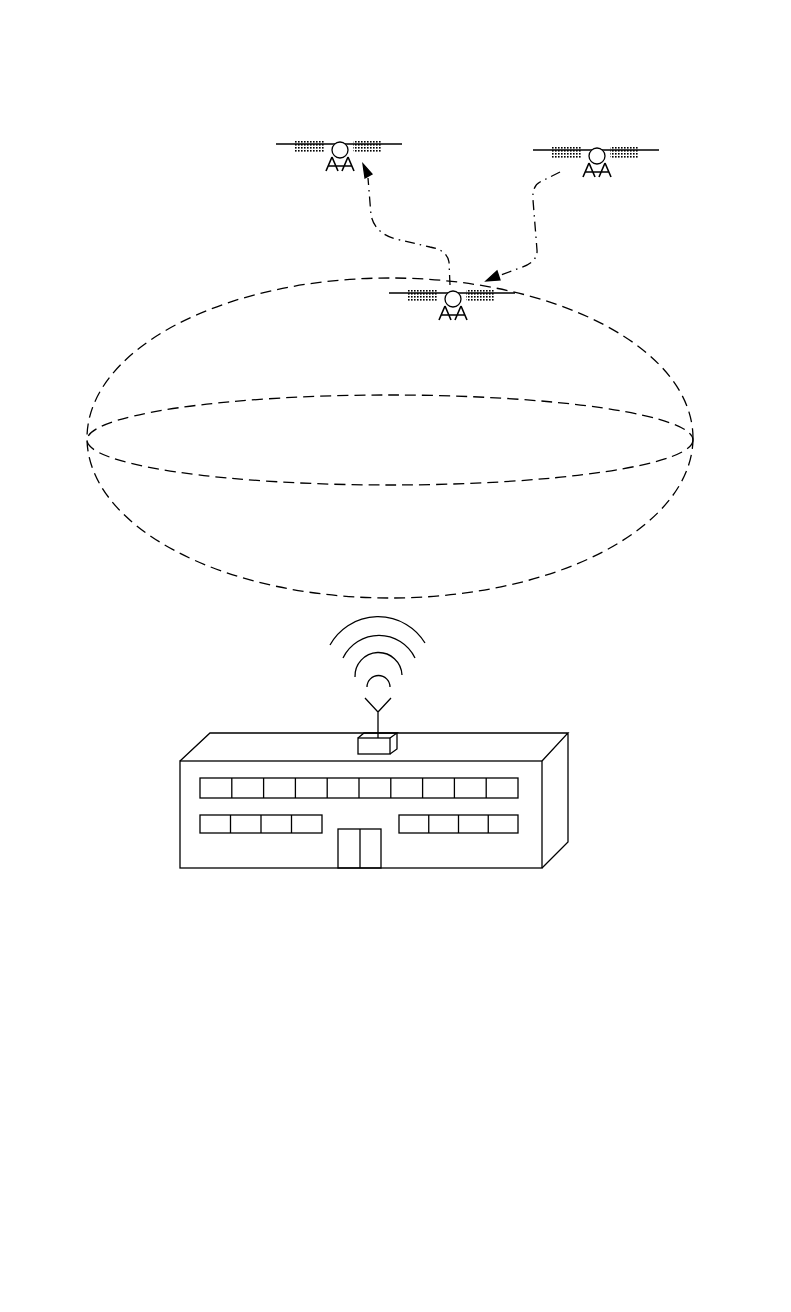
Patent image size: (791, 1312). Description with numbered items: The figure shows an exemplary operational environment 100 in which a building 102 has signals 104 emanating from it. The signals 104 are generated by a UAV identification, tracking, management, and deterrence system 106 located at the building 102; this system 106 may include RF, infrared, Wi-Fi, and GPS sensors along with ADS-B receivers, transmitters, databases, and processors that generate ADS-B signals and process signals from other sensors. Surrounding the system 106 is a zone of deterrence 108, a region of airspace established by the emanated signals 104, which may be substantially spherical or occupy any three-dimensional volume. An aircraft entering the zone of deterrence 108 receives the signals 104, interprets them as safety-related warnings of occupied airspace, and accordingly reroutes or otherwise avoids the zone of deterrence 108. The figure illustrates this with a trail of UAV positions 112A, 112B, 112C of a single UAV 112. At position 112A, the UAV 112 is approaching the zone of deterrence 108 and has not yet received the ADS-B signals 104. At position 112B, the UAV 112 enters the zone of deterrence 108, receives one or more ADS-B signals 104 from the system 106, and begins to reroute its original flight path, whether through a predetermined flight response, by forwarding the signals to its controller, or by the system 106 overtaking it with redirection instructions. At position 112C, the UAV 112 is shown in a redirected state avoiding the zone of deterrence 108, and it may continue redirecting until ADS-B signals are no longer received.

The operational environment 100 is at (128, 91).
The building 102 is at (570, 782).
The signals 104 is at (353, 673).
The UAV identification, tracking, management, and deterrence system 106 is at (393, 733).
The zone of deterrence 108 is at (87, 440).
The UAV 112 is at (630, 149).
The UAV position 112A is at (581, 111).
The UAV position 112B is at (467, 339).
The UAV position 112C is at (309, 187).